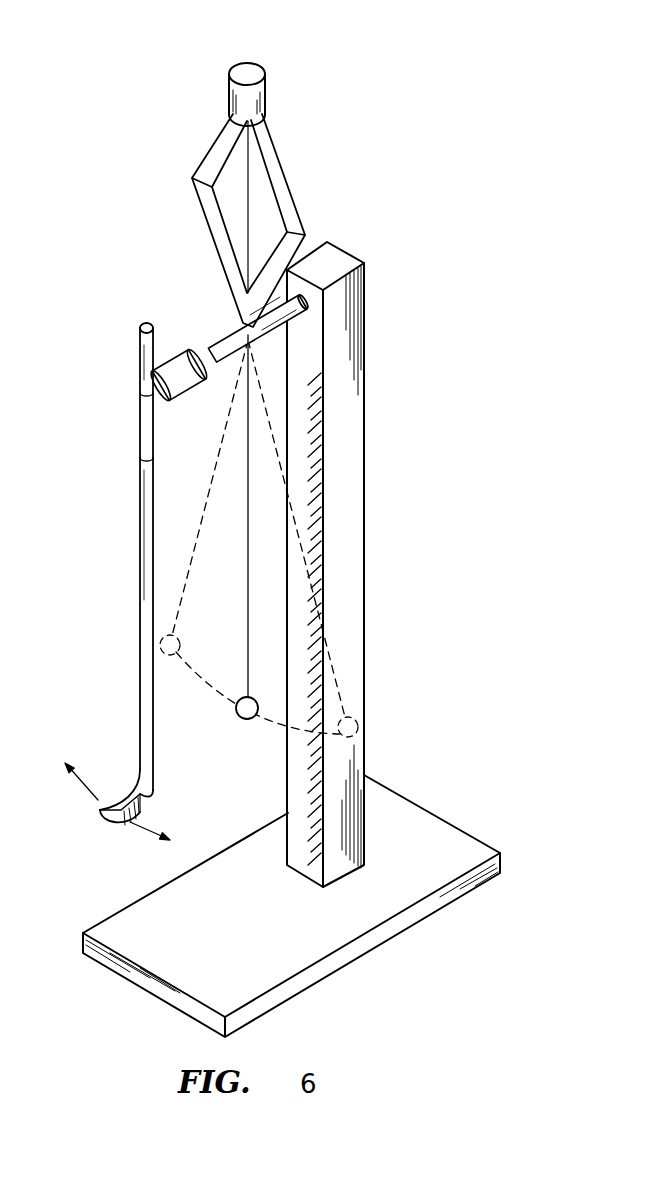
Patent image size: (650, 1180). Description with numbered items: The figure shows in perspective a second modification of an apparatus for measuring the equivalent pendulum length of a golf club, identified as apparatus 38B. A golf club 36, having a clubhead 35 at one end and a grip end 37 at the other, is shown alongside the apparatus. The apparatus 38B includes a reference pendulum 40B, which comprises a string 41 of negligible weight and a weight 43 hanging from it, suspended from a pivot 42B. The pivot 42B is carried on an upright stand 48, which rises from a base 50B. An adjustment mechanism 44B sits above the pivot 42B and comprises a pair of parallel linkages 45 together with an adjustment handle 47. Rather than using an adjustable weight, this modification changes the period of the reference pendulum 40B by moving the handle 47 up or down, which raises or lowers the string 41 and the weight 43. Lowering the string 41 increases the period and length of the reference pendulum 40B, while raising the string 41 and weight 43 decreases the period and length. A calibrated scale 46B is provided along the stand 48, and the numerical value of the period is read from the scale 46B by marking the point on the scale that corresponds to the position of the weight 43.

The clubhead 35 is at (98, 811).
The golf club 36 is at (140, 589).
The grip end 37 is at (140, 357).
The apparatus 38B is at (395, 566).
The reference pendulum 40B is at (229, 531).
The string 41 is at (248, 593).
The pivot 42B is at (221, 346).
The weight 43 is at (243, 719).
The adjustment mechanism 44B is at (276, 200).
The parallel linkages 45 is at (212, 157).
The calibrated scale 46B is at (322, 387).
The adjustment handle 47 is at (254, 71).
The upright post 48 is at (350, 510).
The base 50B is at (445, 847).